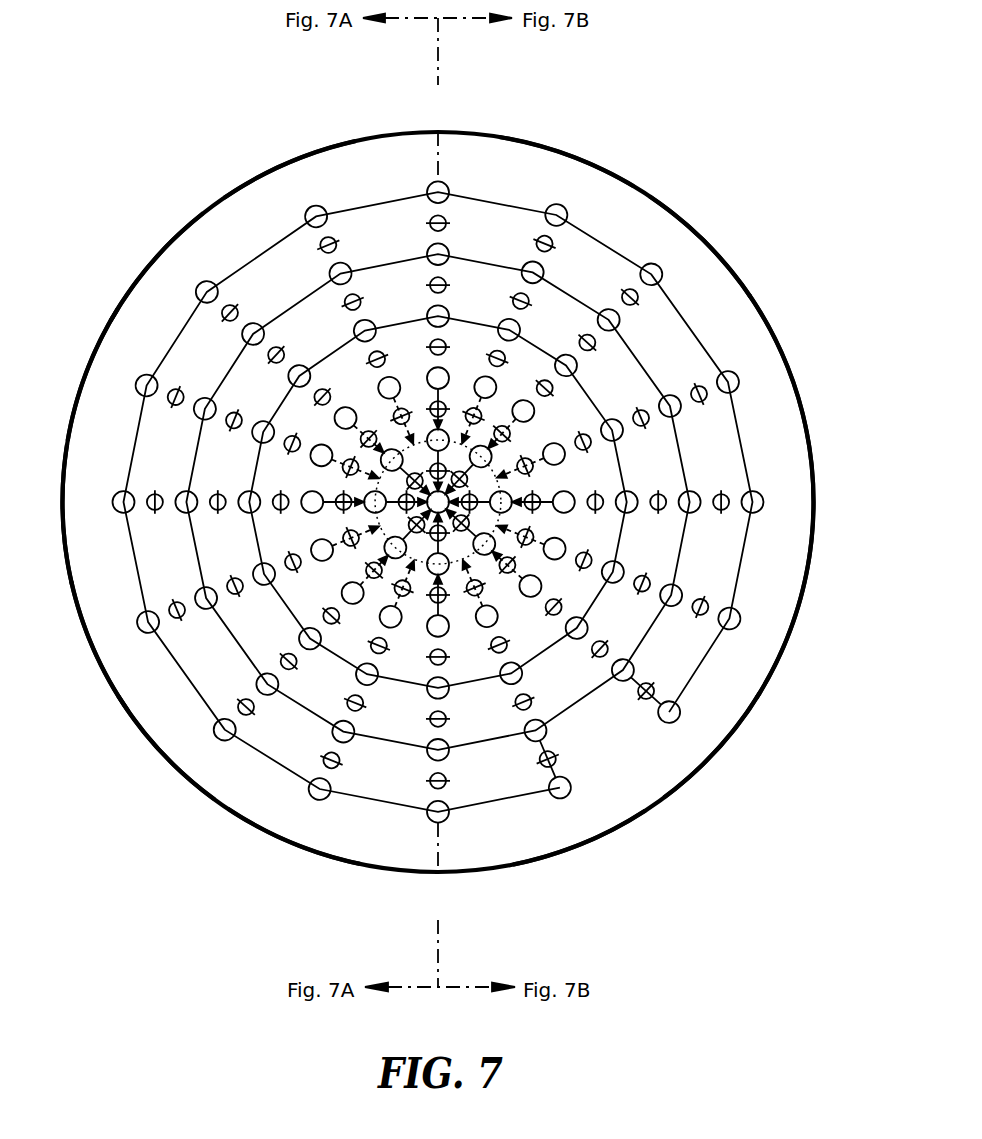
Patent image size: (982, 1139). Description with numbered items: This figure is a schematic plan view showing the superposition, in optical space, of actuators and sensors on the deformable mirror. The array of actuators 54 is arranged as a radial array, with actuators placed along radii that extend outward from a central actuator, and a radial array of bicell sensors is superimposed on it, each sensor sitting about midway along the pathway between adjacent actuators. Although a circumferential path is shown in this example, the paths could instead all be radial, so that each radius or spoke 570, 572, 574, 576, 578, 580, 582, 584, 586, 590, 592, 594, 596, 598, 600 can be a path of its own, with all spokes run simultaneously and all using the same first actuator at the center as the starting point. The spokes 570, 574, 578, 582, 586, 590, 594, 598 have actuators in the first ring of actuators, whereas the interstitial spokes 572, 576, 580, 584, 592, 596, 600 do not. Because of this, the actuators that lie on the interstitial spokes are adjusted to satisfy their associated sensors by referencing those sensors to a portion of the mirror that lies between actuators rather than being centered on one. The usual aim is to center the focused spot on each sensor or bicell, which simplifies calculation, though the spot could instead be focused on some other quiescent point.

The array of actuators 54 is at (652, 167).
The spoke 570 is at (437, 127).
The interstitial spoke 572 is at (570, 152).
The spoke 574 is at (710, 237).
The interstitial spoke 576 is at (792, 357).
The spoke 578 is at (818, 497).
The interstitial spoke 580 is at (792, 635).
The spoke 582 is at (715, 750).
The interstitial spoke 584 is at (583, 848).
The spoke 586 is at (439, 875).
The spoke 590 is at (160, 753).
The interstitial spoke 592 is at (91, 649).
The spoke 594 is at (56, 514).
The interstitial spoke 596 is at (84, 371).
The spoke 598 is at (148, 260).
The interstitial spoke 600 is at (287, 163).